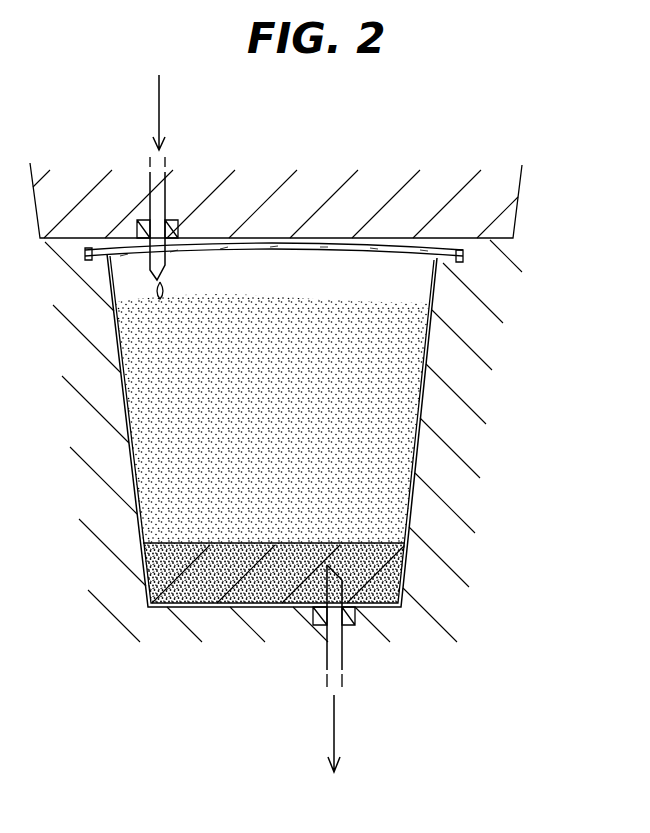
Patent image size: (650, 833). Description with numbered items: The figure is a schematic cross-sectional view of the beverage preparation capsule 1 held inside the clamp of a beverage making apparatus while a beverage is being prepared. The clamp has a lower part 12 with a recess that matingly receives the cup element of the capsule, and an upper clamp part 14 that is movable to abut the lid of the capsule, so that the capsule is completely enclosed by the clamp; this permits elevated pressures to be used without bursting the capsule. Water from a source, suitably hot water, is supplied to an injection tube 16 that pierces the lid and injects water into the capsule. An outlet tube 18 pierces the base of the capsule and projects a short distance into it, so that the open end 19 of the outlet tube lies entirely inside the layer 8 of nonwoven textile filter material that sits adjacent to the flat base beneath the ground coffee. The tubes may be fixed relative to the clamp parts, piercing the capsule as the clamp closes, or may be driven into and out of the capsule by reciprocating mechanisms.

The beverage preparation capsule 1 is at (433, 346).
The layer of nonwoven textile filter material 8 is at (160, 565).
The lower part 12 is at (443, 467).
The upper clamp part 14 is at (522, 184).
The injection tube 16 is at (166, 192).
The outlet tube 18 is at (343, 654).
The open end 19 is at (335, 567).